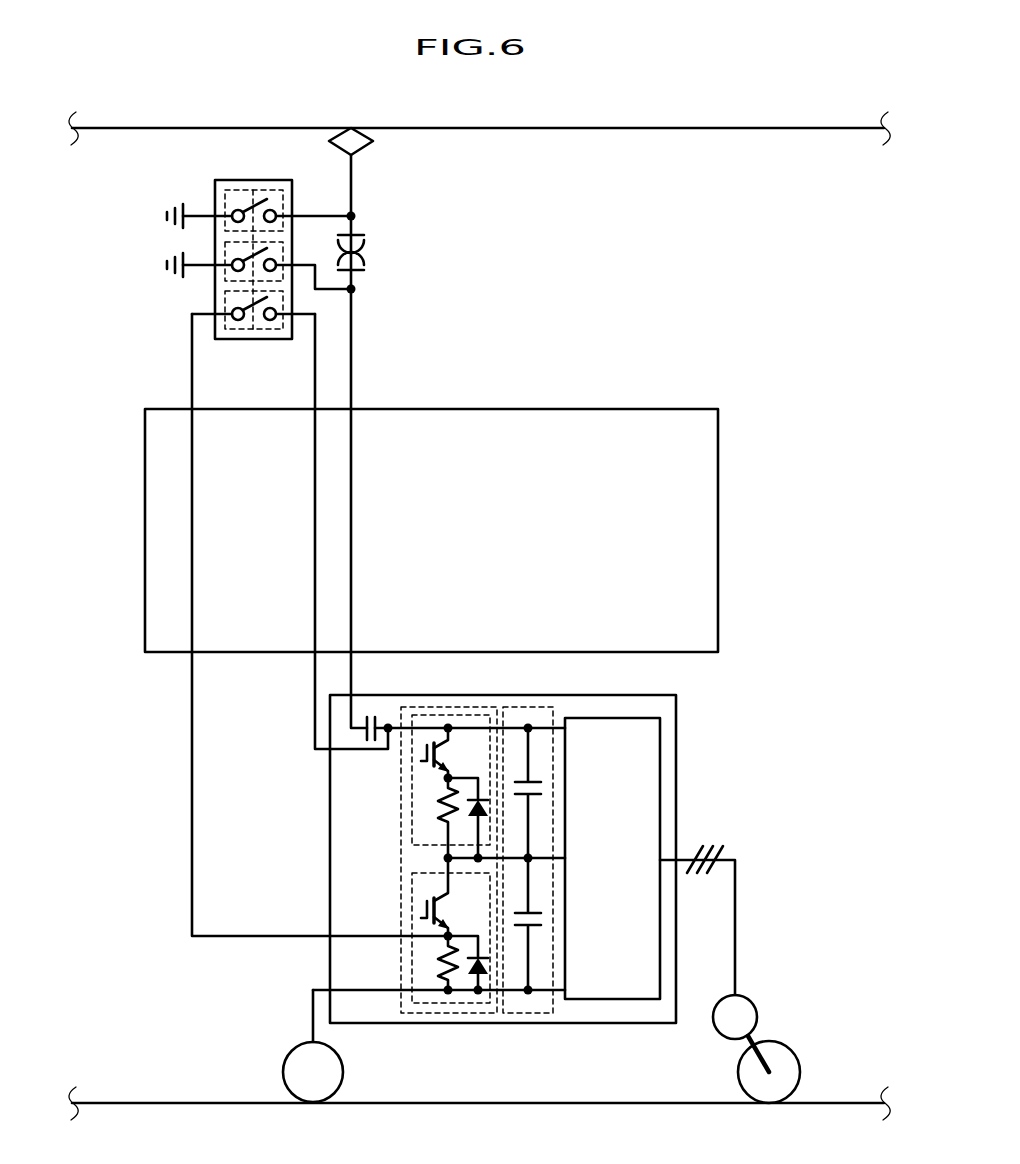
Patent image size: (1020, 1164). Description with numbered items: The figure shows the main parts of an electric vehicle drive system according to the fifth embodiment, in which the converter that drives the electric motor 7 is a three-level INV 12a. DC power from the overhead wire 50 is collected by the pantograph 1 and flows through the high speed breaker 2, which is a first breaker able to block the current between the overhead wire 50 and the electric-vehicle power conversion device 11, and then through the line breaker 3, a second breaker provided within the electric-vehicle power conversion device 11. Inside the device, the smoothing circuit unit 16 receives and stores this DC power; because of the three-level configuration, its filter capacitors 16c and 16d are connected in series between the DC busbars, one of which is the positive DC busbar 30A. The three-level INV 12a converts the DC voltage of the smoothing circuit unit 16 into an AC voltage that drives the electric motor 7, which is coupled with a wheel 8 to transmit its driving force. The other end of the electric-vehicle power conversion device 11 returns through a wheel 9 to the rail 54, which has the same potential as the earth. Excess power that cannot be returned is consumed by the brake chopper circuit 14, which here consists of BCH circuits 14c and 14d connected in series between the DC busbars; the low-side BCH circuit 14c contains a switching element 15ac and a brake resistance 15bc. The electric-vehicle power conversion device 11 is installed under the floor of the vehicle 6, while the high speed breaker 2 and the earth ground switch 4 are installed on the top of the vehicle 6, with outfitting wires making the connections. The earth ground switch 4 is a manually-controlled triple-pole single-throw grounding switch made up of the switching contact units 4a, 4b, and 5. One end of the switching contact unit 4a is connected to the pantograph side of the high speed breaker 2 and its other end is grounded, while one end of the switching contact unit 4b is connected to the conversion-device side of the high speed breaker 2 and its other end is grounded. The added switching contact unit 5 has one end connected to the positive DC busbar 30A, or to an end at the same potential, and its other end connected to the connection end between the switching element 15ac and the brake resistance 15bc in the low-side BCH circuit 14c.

The overhead wire 50 is at (826, 125).
The pantograph 1 is at (365, 150).
The high speed breaker 2 is at (365, 246).
The line breaker 3 is at (376, 717).
The earth ground switch 4 is at (237, 180).
The switching contact unit 4a is at (215, 200).
The switching contact unit 4b is at (215, 251).
The switching contact unit 5 is at (215, 301).
The vehicle 6 is at (641, 409).
The electric motor 7 is at (756, 1005).
The wheel 8 is at (738, 1076).
The wheel 9 is at (283, 1072).
The electric-vehicle power conversion device 11 is at (678, 728).
The three-level inverter 12a is at (612, 999).
The brake chopper circuit 14 is at (455, 1013).
The brake chopper circuit 14c is at (364, 967).
The brake chopper circuit 14d is at (370, 763).
The switching element 15ac is at (424, 912).
The brake resistance 15bc is at (440, 979).
The smoothing circuit unit 16 is at (529, 876).
The filter capacitor 16c is at (521, 940).
The filter capacitor 16d is at (519, 780).
The positive DC busbar 30A is at (420, 728).
The rail 54 is at (827, 1103).